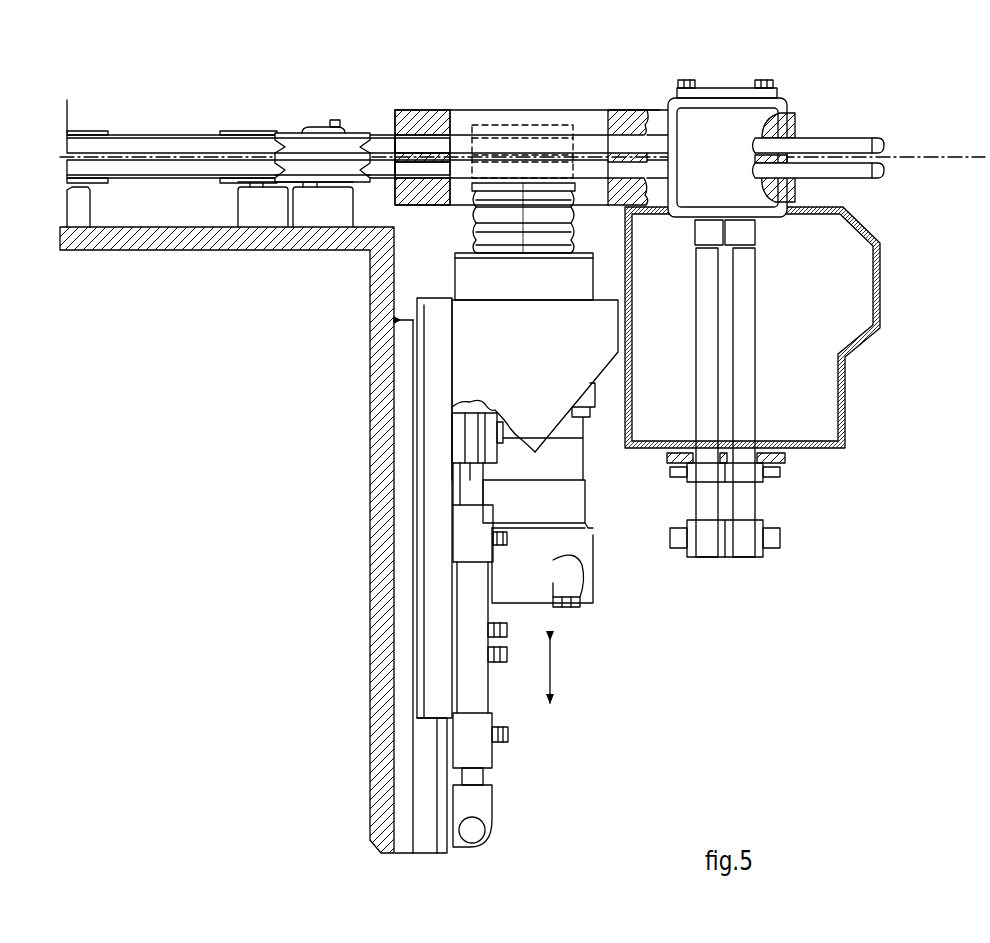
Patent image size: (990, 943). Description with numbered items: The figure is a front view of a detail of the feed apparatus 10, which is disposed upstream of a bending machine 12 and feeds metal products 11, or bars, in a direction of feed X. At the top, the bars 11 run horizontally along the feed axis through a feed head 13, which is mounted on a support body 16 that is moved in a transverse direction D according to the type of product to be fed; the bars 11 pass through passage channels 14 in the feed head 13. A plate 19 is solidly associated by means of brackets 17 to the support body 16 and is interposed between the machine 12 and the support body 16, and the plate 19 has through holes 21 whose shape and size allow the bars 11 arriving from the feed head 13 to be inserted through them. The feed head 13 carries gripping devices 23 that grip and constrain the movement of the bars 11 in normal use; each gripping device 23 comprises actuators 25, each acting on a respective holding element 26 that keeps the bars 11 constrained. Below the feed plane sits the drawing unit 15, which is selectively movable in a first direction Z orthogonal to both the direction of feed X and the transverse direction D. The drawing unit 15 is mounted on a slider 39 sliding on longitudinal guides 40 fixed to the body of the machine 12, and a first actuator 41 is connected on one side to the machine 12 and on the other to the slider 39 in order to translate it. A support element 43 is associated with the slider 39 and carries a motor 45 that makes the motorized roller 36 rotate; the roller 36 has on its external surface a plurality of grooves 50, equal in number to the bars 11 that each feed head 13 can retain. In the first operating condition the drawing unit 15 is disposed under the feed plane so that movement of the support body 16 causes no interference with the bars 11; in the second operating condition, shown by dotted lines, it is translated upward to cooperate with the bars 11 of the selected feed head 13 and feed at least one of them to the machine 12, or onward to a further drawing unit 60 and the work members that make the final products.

The feed apparatus 10 is at (668, 57).
The metal products 11 is at (857, 172).
The bending machine 12 is at (367, 627).
The feed heads 13 is at (791, 192).
The passage channels 14 is at (775, 165).
The drawing unit 15 is at (598, 568).
The support body 16 is at (727, 92).
The brackets 17 is at (595, 125).
The plate 19 is at (408, 123).
The through holes 21 is at (424, 140).
The gripping devices 23 is at (783, 424).
The actuators 25 is at (748, 418).
The holding element 26 is at (741, 232).
The motorized roller 36 is at (552, 182).
The slider 39 is at (426, 367).
The longitudinal guides 40 is at (424, 812).
The first actuator 41 is at (484, 683).
The support element 43 is at (564, 396).
The motor 45 is at (573, 502).
The grooves 50 is at (574, 200).
The drawing unit 60 is at (273, 118).